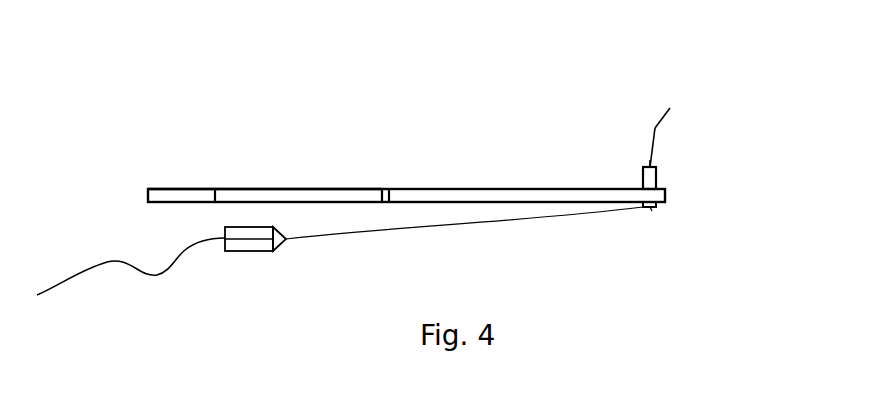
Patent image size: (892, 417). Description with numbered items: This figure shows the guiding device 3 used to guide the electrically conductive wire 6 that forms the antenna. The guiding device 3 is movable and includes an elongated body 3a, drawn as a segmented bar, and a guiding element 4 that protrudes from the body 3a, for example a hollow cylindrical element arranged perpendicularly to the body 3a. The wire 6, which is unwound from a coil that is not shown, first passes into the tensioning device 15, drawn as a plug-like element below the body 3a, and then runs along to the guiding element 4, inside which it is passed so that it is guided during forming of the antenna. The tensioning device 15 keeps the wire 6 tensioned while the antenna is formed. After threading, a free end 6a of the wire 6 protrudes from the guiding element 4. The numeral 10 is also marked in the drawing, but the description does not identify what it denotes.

The guiding device 3 is at (250, 128).
The body 3a is at (327, 189).
The guiding element 4 is at (652, 180).
The wire 6 is at (512, 220).
The free end 6a is at (655, 128).
The device 10 is at (300, 0).
The tensioning device 15 is at (240, 244).